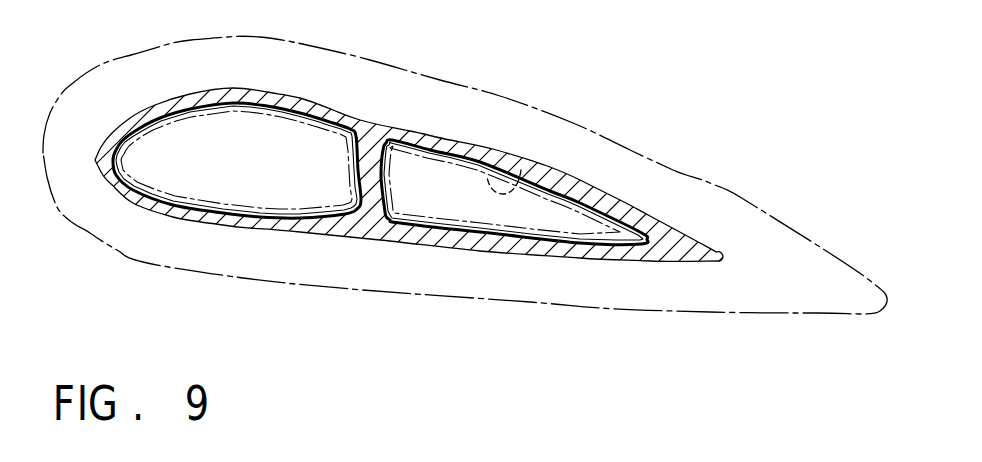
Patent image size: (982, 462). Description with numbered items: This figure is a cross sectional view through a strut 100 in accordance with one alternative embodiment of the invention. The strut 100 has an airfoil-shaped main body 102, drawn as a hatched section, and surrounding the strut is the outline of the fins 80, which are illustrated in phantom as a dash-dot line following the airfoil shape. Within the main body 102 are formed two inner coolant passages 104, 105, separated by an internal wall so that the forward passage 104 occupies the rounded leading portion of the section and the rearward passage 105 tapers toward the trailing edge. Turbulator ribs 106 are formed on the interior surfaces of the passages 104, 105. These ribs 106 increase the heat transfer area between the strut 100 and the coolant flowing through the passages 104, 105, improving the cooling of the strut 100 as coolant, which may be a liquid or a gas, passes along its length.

The fins 80 is at (410, 297).
The strut 100 is at (470, 170).
The main body 102 is at (682, 240).
The inner coolant passage 104 is at (278, 165).
The inner coolant passage 105 is at (467, 193).
The turbulator ribs 106 is at (521, 170).